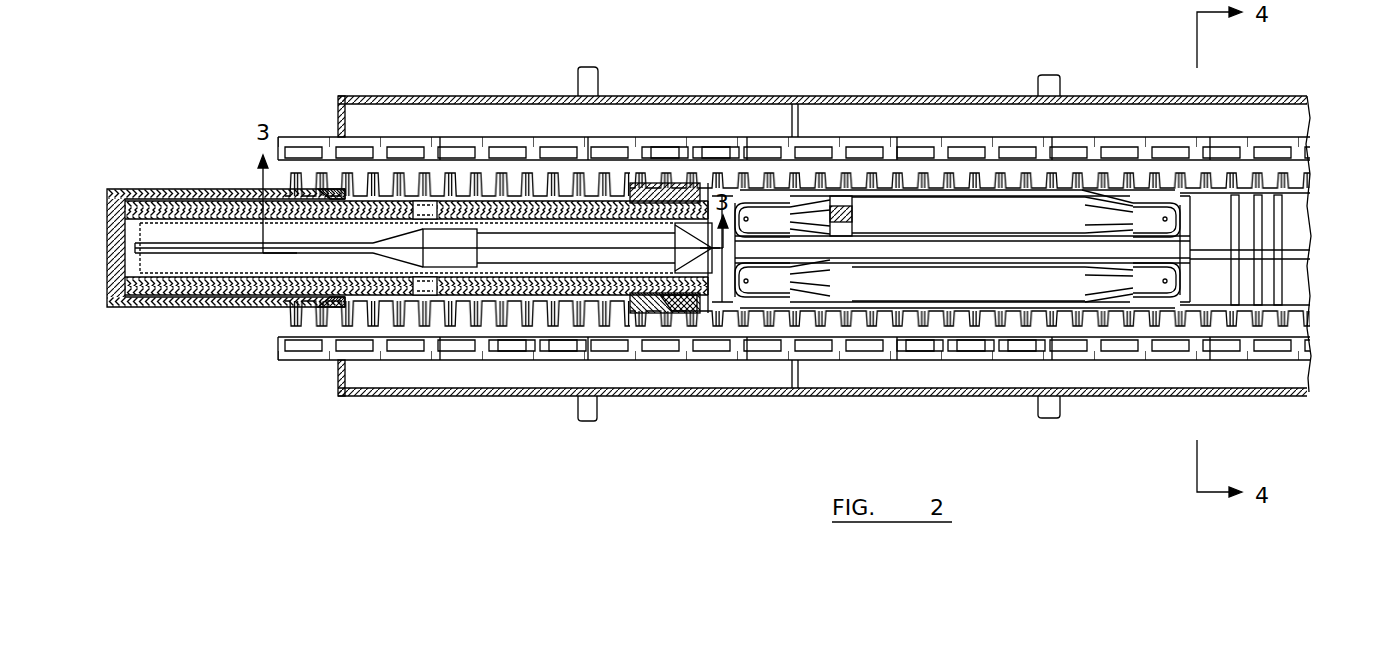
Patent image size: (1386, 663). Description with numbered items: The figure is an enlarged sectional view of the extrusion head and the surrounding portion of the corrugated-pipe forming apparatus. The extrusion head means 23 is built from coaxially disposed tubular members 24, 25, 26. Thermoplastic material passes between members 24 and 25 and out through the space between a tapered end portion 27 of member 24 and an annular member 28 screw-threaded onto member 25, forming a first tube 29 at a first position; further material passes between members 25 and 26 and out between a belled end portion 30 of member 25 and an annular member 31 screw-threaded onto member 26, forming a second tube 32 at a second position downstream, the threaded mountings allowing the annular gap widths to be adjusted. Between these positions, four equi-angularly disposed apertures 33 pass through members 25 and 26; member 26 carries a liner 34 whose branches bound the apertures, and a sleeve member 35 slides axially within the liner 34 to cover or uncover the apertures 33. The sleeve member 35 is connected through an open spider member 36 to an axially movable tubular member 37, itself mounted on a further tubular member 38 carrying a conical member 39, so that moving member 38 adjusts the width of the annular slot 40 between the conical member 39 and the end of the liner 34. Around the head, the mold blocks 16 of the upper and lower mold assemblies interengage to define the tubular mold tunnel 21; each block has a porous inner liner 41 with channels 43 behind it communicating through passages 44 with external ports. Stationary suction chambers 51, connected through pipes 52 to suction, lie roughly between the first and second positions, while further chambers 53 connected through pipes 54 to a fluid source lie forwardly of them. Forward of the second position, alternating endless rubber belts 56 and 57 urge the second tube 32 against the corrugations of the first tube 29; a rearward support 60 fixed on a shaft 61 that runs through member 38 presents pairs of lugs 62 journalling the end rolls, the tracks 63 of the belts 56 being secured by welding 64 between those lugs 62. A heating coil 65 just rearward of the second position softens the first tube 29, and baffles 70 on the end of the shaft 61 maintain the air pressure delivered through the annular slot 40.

The mold block 16 is at (950, 136).
The tubular mold tunnel 21 is at (1044, 248).
The extrusion head means 23 is at (445, 248).
The tubular member 24 is at (146, 190).
The tubular member 25 is at (196, 205).
The tubular member 26 is at (252, 200).
The tapered end portion 27 is at (330, 190).
The annular member 28 is at (315, 298).
The first tube 29 is at (353, 190).
The belled end portion 30 is at (682, 312).
The annular member 31 is at (700, 192).
The second tube 32 is at (758, 192).
The apertures 33 is at (425, 205).
The liner 34 is at (533, 210).
The sleeve member 35 is at (457, 237).
The open spider member 36 is at (391, 228).
The tubular member 37 is at (202, 257).
The tubular member 38 is at (505, 250).
The conical member 39 is at (676, 205).
The annular slot 40 is at (722, 312).
The inner liner 41 is at (1000, 172).
The channels 43 is at (1025, 352).
The passages 44 is at (722, 144).
The suction chambers 51 is at (455, 96).
The pipes 52 is at (592, 82).
The stationary chambers 53 is at (1262, 98).
The pipes 54 is at (1060, 82).
The endless flexible rubber belts 56 is at (790, 204).
The endless flexible rubber belts 57 is at (962, 249).
The rearward support 60 is at (1135, 190).
The fixed shaft 61 is at (1181, 252).
The lugs 62 is at (768, 212).
The fixed track 63 is at (762, 300).
The welding 64 is at (858, 212).
The heating coil 65 is at (636, 312).
The baffles 70 is at (1276, 274).